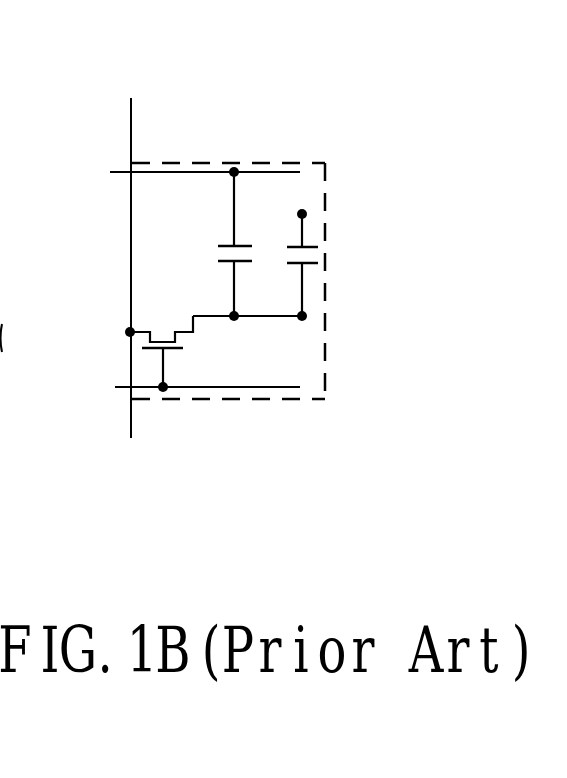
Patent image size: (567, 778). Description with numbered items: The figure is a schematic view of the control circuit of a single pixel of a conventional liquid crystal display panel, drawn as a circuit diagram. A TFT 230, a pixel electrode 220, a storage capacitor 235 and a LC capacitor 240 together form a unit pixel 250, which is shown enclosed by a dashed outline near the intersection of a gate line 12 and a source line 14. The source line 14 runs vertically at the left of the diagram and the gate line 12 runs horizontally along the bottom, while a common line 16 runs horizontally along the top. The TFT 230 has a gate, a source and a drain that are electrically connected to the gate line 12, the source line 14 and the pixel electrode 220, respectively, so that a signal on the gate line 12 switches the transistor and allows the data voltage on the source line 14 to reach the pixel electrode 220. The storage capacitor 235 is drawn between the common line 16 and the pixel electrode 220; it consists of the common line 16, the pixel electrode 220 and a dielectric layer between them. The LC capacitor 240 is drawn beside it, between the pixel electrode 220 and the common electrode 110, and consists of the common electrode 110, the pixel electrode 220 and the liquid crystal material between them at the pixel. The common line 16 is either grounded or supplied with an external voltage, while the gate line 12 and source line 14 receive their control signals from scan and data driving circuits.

The gate line 12 is at (202, 388).
The source line 14 is at (131, 116).
The common line 16 is at (203, 165).
The common electrode 110 is at (303, 200).
The pixel electrode 220 is at (270, 322).
The TFT 230 is at (162, 335).
The storage capacitor 235 is at (224, 235).
The LC capacitor 240 is at (306, 240).
The unit pixel 250 is at (340, 357).